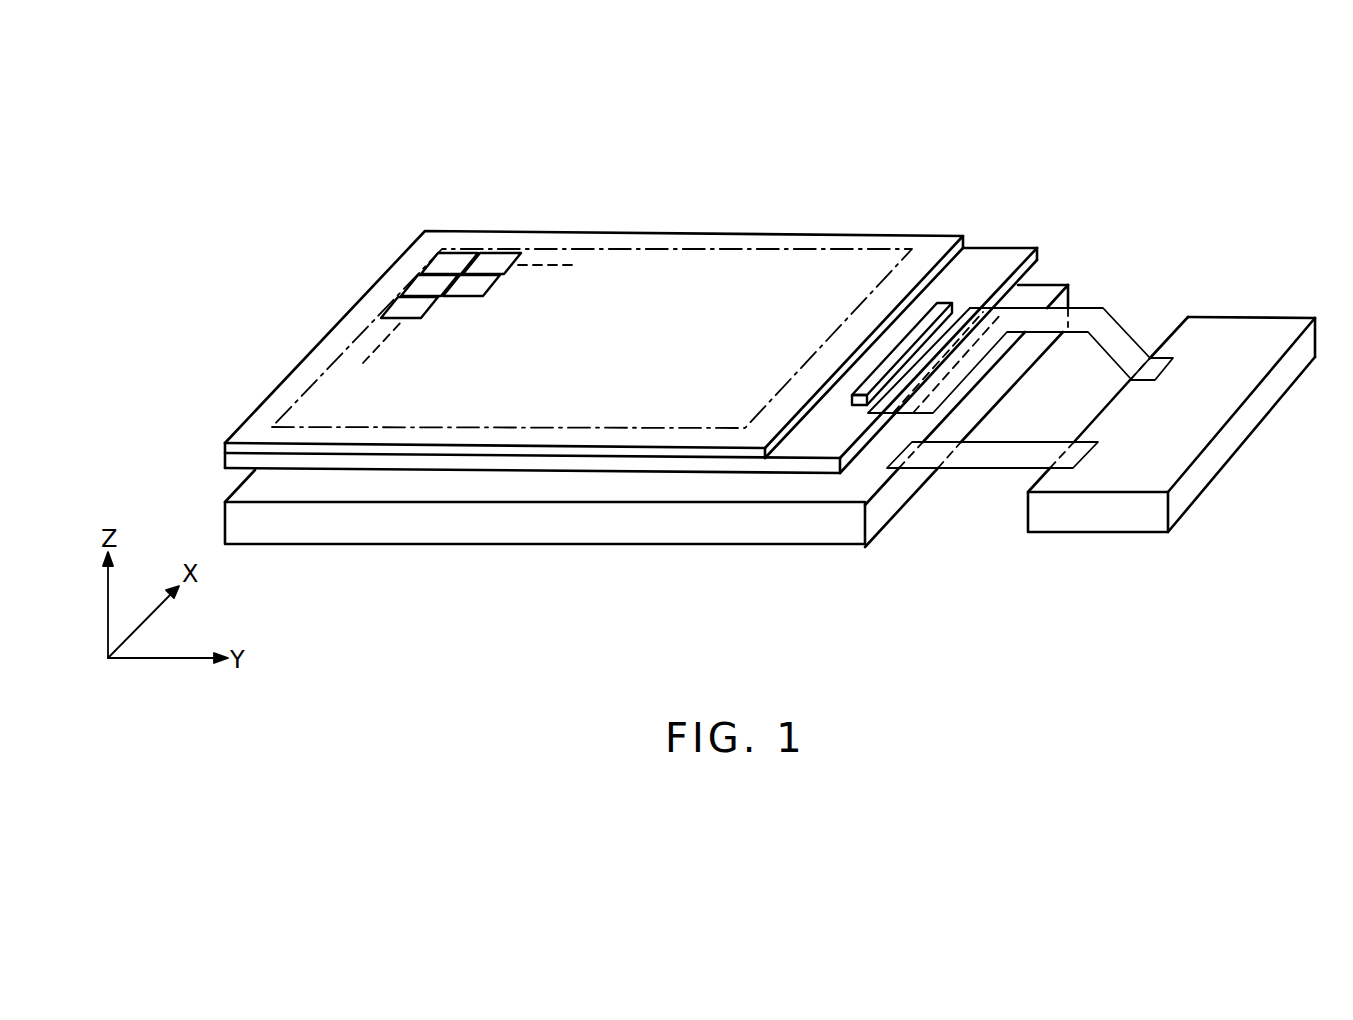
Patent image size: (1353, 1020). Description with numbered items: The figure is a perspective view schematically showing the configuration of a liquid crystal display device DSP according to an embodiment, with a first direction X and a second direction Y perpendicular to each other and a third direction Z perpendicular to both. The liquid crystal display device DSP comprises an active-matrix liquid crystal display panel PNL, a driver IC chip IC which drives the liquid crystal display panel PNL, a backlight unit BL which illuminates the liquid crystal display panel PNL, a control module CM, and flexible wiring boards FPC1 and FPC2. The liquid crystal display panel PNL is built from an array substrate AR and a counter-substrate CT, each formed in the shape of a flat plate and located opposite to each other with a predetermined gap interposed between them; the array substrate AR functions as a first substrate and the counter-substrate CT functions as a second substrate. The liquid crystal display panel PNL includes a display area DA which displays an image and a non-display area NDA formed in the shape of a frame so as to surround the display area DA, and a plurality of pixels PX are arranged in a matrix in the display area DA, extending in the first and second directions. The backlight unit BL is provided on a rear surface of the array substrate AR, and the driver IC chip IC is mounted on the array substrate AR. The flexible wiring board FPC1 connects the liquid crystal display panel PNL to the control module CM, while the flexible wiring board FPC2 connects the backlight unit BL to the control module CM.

The liquid crystal display device DSP is at (1142, 155).
The liquid crystal display panel PNL is at (216, 453).
The counter-substrate CT is at (922, 235).
The array substrate AR is at (1034, 247).
The non-display area NDA is at (688, 240).
The display area DA is at (552, 246).
The pixels PX is at (452, 262).
The driver IC chip IC is at (946, 300).
The flexible wiring board FPC1 is at (1118, 337).
The flexible wiring board FPC2 is at (985, 455).
The backlight unit BL is at (762, 528).
The control module CM is at (1100, 518).